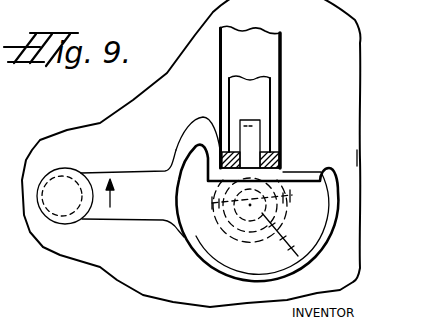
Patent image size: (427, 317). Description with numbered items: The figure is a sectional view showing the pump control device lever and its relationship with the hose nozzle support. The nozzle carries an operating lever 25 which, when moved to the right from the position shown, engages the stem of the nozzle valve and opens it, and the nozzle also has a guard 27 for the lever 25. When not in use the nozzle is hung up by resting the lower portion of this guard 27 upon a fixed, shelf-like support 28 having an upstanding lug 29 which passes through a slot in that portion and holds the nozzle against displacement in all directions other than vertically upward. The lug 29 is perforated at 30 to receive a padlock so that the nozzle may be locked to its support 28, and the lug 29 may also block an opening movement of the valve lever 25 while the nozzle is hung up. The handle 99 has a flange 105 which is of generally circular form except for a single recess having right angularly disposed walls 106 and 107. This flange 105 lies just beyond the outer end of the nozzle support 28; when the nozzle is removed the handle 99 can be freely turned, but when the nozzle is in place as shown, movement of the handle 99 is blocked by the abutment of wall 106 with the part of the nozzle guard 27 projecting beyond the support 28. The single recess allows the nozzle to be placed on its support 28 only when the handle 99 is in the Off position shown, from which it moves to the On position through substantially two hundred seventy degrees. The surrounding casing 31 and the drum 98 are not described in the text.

The operating lever 25 is at (257, 90).
The guard 27 is at (272, 50).
The shelf-like support 28 is at (292, 195).
The upstanding lug 29 is at (250, 140).
The perforation 30 is at (250, 122).
The casing 31 is at (357, 77).
The drum 98 is at (302, 261).
The handle 99 is at (147, 208).
The flange 105 is at (232, 253).
The wall 106 is at (213, 148).
The wall 107 is at (357, 159).